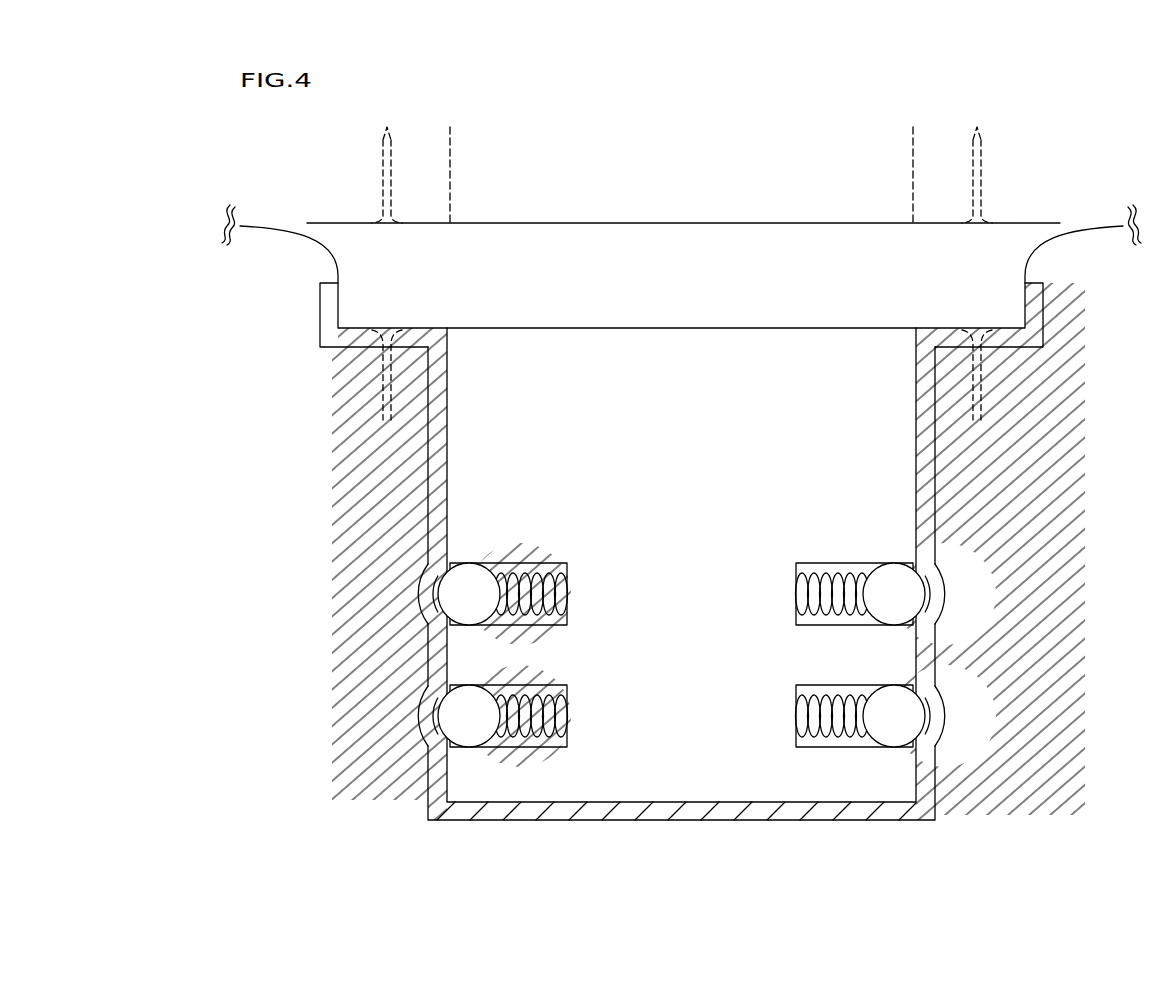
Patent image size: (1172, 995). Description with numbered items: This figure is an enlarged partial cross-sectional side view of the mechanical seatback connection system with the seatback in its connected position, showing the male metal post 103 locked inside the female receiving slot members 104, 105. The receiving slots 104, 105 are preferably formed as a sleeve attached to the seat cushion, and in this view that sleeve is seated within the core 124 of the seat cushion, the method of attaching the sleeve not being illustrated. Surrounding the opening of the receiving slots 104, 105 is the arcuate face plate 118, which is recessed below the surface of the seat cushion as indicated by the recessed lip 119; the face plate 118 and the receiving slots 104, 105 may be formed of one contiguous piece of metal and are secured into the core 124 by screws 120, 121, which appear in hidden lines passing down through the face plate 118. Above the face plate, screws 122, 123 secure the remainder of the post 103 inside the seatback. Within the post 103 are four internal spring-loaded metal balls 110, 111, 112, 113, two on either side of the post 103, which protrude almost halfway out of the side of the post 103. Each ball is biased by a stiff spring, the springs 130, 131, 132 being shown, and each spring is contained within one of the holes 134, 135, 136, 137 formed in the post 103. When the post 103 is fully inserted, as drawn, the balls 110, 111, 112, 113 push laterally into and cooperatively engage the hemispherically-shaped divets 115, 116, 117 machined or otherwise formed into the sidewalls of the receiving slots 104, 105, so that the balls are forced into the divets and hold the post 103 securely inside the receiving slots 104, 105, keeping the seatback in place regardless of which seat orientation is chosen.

The male metal post 103 is at (681, 279).
The female receiving slot member 104 is at (681, 574).
The female receiving slot member 105 is at (449, 385).
The spring-loaded metal ball 110 is at (895, 573).
The spring-loaded metal ball 111 is at (890, 732).
The spring-loaded metal ball 112 is at (475, 573).
The spring-loaded metal ball 113 is at (472, 732).
The hemispherically-shaped divet 115 is at (950, 714).
The hemispherically-shaped divet 116 is at (433, 592).
The hemispherically-shaped divet 117 is at (433, 715).
The arcuate face plate 118 is at (432, 326).
The recessed lip 119 is at (350, 297).
The screw 120 is at (983, 359).
The screw 121 is at (383, 363).
The screw 122 is at (384, 189).
The screw 123 is at (982, 191).
The core of the seat cushion 124 is at (708, 551).
The stiff spring 130 is at (826, 569).
The stiff spring 131 is at (820, 738).
The stiff spring 132 is at (541, 566).
The hole 134 is at (796, 624).
The hole 135 is at (796, 687).
The hole 136 is at (571, 624).
The hole 137 is at (571, 686).